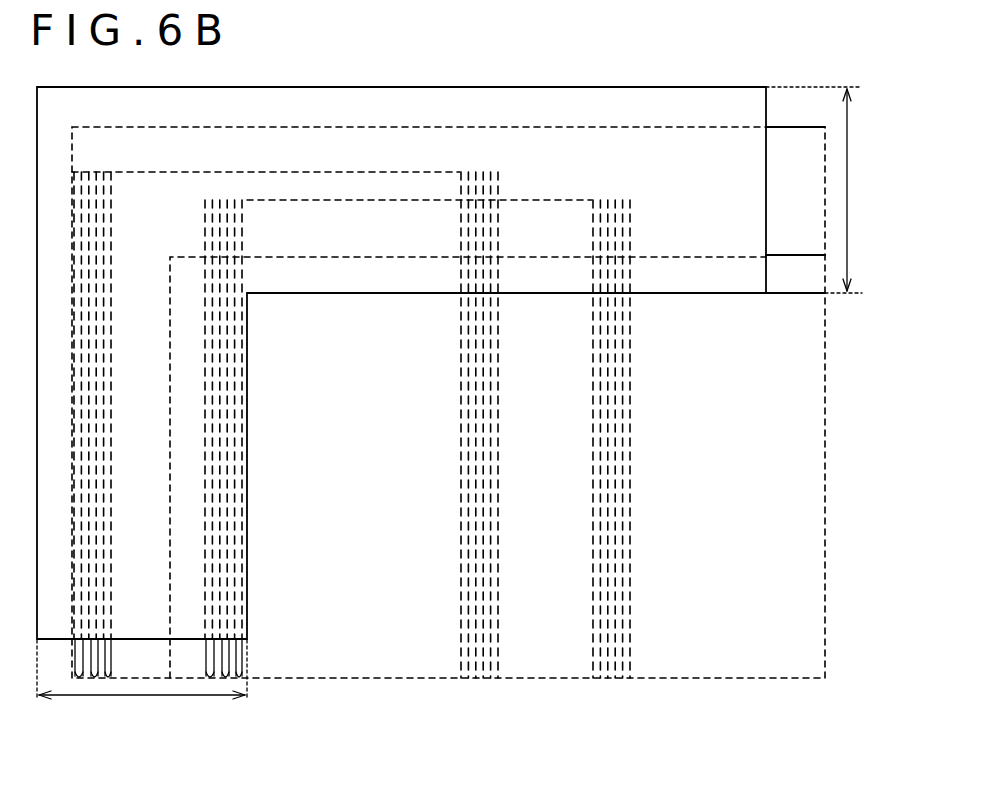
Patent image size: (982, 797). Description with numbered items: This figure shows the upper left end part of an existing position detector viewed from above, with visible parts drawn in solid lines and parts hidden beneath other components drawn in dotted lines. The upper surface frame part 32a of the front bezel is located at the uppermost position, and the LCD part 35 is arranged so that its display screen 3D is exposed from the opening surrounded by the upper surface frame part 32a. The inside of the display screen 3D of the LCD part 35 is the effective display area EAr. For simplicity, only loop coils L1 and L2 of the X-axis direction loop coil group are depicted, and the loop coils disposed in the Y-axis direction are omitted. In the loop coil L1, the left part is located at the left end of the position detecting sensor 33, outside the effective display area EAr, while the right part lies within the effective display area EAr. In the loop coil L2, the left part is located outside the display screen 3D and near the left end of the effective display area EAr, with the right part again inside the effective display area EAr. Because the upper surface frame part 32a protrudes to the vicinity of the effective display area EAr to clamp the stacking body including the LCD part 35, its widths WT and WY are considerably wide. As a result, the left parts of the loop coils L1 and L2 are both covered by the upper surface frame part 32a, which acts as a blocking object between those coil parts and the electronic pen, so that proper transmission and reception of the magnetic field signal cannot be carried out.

The upper surface frame part 32a is at (270, 87).
The position detecting sensor 33 is at (398, 126).
The loop coil L1 is at (188, 172).
The loop coil L2 is at (532, 200).
The LCD part 35 is at (657, 256).
The display screen 3D is at (787, 295).
The width WY is at (827, 190).
The width WT is at (142, 683).
The effective display area EAr is at (357, 660).